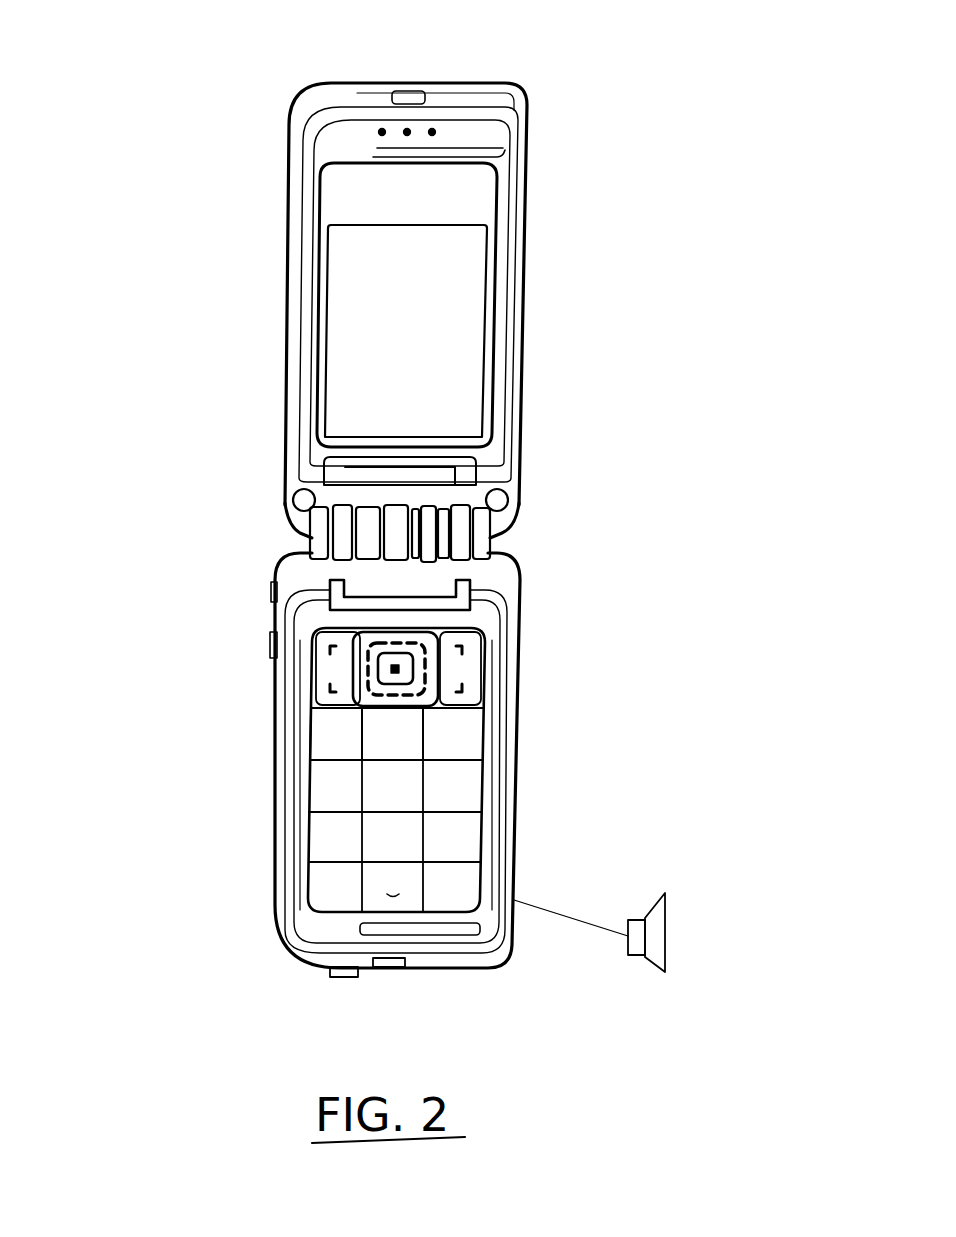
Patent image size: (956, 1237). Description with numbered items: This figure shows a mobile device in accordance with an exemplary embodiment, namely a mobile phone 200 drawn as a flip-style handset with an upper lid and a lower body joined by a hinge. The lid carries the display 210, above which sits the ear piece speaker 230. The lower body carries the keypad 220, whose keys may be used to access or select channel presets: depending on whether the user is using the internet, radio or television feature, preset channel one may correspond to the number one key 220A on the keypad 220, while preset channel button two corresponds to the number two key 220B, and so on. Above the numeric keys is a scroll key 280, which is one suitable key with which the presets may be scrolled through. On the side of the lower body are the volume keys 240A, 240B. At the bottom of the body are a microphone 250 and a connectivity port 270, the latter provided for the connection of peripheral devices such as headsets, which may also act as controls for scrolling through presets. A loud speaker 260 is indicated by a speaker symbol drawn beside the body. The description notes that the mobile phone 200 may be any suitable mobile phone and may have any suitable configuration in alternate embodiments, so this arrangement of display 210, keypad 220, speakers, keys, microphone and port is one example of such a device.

The mobile phone 200 is at (426, 525).
The display 210 is at (455, 343).
The keypad 220 is at (468, 750).
The number one key 220A is at (330, 728).
The number two key 220B is at (410, 727).
The ear piece speaker 230 is at (445, 134).
The volume key 240A is at (272, 592).
The volume key 240B is at (272, 648).
The microphone 250 is at (398, 970).
The loud speaker 260 is at (665, 958).
The connectivity port 270 is at (343, 977).
The scroll key 280 is at (435, 634).